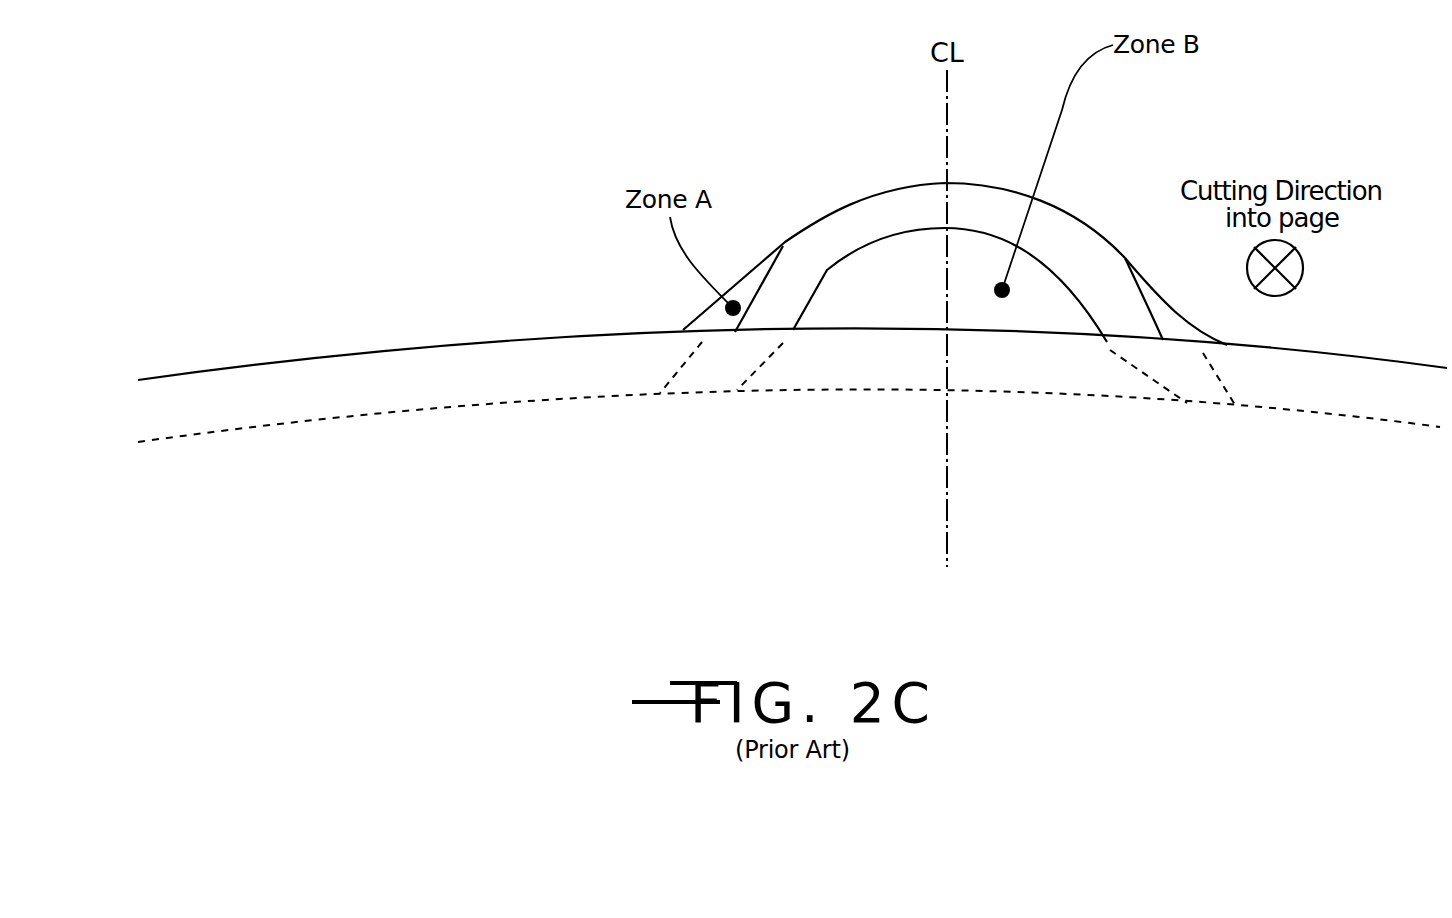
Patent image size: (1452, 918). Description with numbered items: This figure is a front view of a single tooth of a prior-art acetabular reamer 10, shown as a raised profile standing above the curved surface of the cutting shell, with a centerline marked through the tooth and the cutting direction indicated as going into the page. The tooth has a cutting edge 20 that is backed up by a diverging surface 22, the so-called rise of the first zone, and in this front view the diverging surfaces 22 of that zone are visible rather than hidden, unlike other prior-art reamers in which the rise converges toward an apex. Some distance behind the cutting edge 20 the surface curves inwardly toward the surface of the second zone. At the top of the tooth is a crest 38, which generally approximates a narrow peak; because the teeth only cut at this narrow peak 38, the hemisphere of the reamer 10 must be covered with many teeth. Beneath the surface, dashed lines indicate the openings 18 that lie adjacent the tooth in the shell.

The acetabular reamer 10 is at (467, 377).
The crest 38 is at (946, 183).
The cutting edge 20 is at (1066, 205).
The diverging surface 22 is at (878, 291).
The openings 18 is at (1100, 362).